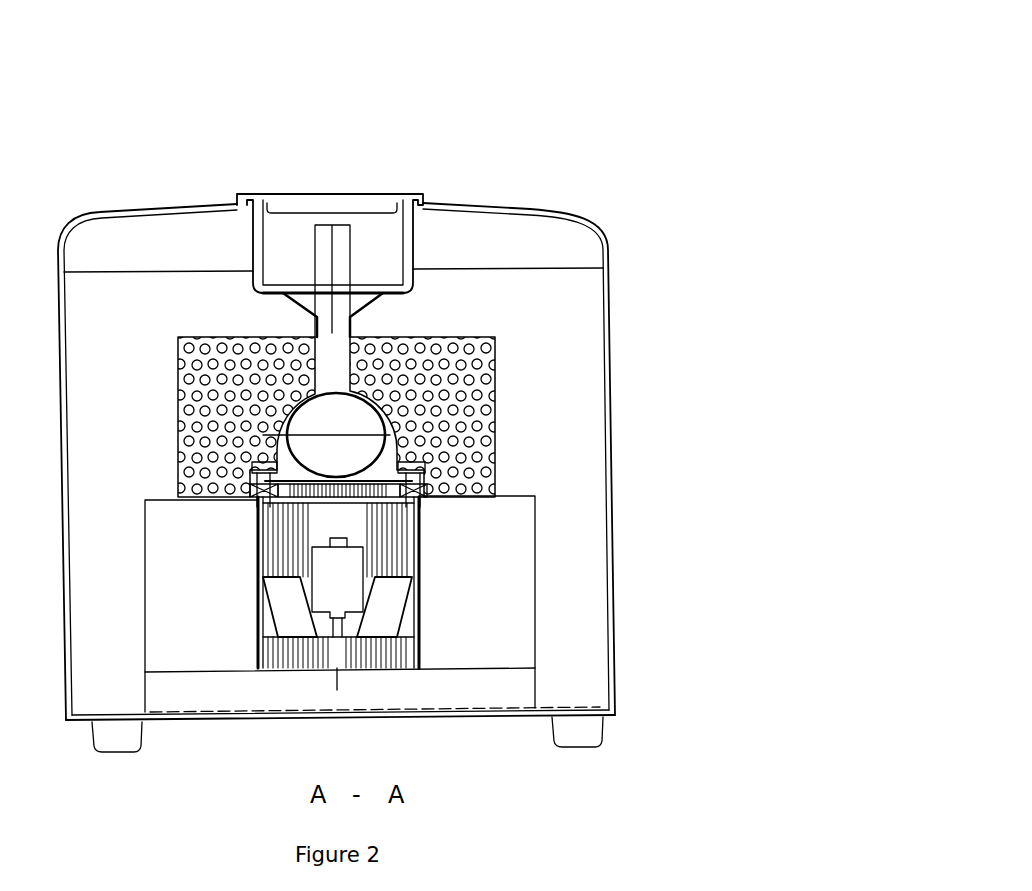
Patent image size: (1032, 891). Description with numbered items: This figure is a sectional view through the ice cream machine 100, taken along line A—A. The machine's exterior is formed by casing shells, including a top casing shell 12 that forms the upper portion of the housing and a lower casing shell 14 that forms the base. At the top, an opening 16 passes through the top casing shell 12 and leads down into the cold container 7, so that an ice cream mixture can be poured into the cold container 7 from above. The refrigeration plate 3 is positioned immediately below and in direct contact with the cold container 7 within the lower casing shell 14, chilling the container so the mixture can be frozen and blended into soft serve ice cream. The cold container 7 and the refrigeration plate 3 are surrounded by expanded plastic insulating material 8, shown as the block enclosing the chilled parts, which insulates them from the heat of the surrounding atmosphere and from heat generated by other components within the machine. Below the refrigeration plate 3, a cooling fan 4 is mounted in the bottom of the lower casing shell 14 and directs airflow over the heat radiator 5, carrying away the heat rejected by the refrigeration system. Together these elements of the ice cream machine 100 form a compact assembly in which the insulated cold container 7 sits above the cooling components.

The ice cream machine 100 is at (234, 155).
The top casing shell 12 is at (533, 208).
The opening 16 is at (330, 255).
The expanded plastic insulating material 8 is at (447, 355).
The cold container 7 is at (397, 437).
The refrigeration plate 3 is at (430, 481).
The cooling fan 4 is at (397, 597).
The heat radiator 5 is at (500, 643).
The lower casing shell 14 is at (583, 708).